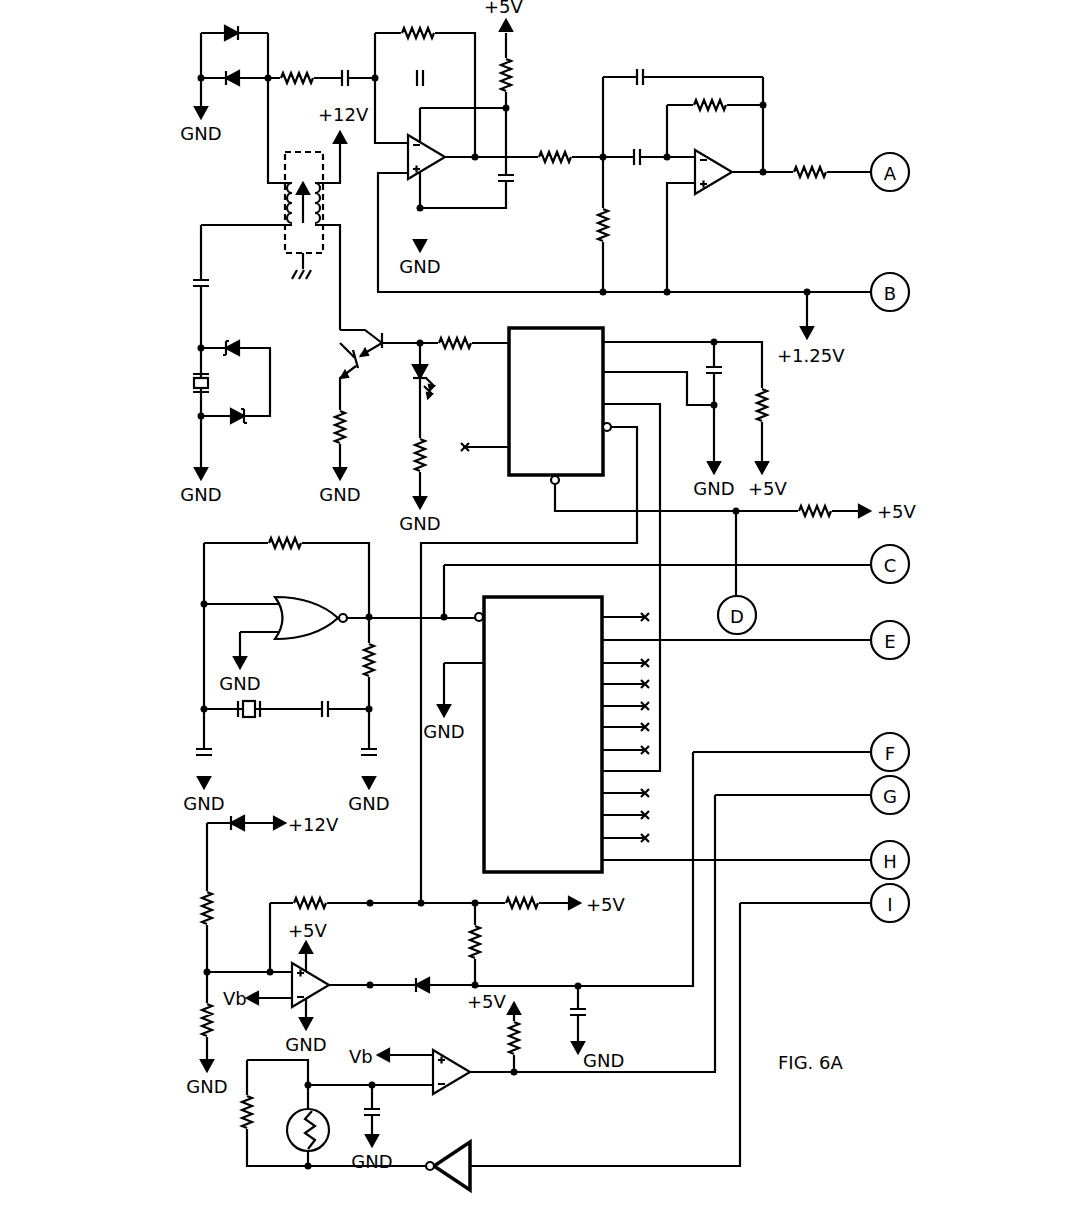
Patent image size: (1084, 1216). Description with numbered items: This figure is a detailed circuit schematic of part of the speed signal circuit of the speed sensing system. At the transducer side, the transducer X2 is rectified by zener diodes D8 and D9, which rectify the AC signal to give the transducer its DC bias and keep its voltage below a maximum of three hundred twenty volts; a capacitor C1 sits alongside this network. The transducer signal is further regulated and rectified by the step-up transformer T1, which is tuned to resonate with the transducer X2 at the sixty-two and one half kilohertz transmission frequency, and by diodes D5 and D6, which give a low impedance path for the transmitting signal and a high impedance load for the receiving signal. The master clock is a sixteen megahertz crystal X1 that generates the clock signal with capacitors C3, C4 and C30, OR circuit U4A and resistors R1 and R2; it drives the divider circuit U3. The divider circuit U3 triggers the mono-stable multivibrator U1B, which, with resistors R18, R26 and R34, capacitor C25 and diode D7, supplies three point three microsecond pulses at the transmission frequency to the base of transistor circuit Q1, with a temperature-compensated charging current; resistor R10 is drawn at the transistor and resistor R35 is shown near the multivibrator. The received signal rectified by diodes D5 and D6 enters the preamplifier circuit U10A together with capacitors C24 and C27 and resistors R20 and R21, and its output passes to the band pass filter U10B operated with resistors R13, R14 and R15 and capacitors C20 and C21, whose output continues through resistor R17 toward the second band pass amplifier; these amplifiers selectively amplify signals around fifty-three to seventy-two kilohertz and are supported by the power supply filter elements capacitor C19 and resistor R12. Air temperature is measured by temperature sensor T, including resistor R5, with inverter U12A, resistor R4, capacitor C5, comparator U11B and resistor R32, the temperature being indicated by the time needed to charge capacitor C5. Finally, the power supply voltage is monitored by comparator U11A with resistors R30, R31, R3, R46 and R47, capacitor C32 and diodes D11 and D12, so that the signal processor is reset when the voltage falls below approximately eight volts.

The diode D5 is at (233, 21).
The diode D6 is at (234, 68).
The resistor R21 is at (296, 68).
The capacitor C24 is at (344, 69).
The resistor R20 is at (419, 22).
The capacitor C27 is at (420, 69).
The resistor R12 is at (526, 75).
The preamplifier circuit U10A is at (443, 163).
The capacitor C19 is at (522, 174).
The resistor R13 is at (554, 145).
The capacitor C20 is at (634, 146).
The capacitor C21 is at (683, 66).
The resistor R15 is at (715, 95).
The resistor R14 is at (622, 225).
The band pass filter U10B is at (725, 181).
The resistor R17 is at (809, 160).
The transformer T1 is at (304, 202).
The capacitor C1 is at (214, 284).
The zener diode D8 is at (234, 333).
The transducer X2 is at (217, 382).
The zener diode D9 is at (242, 431).
The transistor circuit Q1 is at (380, 387).
The resistor R10 is at (359, 427).
The diode D7 is at (440, 381).
The resistor R26 is at (438, 455).
The resistor R18 is at (457, 330).
The mono-stable multivibrator U1B is at (560, 396).
The capacitor C25 is at (731, 370).
The resistor R34 is at (783, 405).
The resistor R35 is at (817, 500).
The resistor R1 is at (285, 531).
The OR circuit U4A is at (311, 607).
The resistor R2 is at (383, 660).
The capacitor C4 is at (325, 697).
The crystal X1 is at (251, 723).
The capacitor C30 is at (222, 756).
The capacitor C3 is at (383, 757).
The divider circuit U3 is at (538, 724).
The diode D11 is at (240, 837).
The resistor R30 is at (226, 908).
The resistor R3 is at (220, 1022).
The resistor R46 is at (311, 892).
The comparator U11A is at (328, 989).
The diode D12 is at (428, 974).
The resistor R47 is at (494, 942).
The resistor R31 is at (524, 892).
The resistor R32 is at (531, 1038).
The capacitor C32 is at (598, 1017).
The comparator U11B is at (469, 1076).
The resistor R4 is at (259, 1112).
The resistor R5 is at (319, 1136).
The capacitor C5 is at (385, 1114).
The inverter U12A is at (475, 1170).